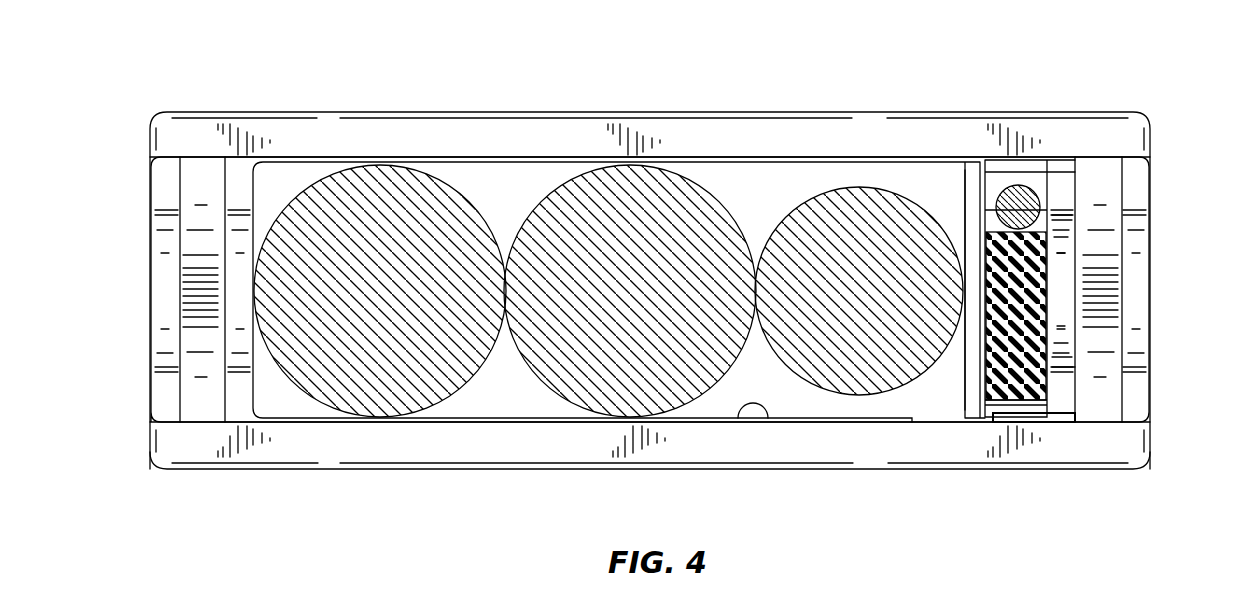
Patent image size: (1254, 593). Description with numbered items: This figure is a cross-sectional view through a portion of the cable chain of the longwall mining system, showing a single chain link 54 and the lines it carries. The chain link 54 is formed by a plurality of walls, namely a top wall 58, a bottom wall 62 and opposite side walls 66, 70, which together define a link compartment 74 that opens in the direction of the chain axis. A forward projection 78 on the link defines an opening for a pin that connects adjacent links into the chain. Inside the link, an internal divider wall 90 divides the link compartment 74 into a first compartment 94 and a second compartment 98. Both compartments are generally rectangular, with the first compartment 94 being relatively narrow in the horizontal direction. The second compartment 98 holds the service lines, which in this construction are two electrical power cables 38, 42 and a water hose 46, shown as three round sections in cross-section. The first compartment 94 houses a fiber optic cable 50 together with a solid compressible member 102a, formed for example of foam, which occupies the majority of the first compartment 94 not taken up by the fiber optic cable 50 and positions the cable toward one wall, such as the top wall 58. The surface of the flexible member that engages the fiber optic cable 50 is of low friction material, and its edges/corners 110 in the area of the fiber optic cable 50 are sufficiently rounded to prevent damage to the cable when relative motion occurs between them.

The electrical power cable 38 is at (320, 400).
The electrical power cable 42 is at (560, 396).
The water hose 46 is at (880, 392).
The fiber optic cable 50 is at (1020, 186).
The chain link 54 is at (383, 94).
The top wall 58 is at (587, 112).
The bottom wall 62 is at (457, 470).
The side wall 66 is at (150, 387).
The side wall 70 is at (1150, 380).
The link compartment 74 is at (930, 180).
The forward projection 78 is at (202, 186).
The internal divider wall 90 is at (958, 383).
The first compartment 94 is at (1012, 410).
The second compartment 98 is at (758, 398).
The compressible member 102a is at (1048, 282).
The edges/corners 110 is at (1042, 224).